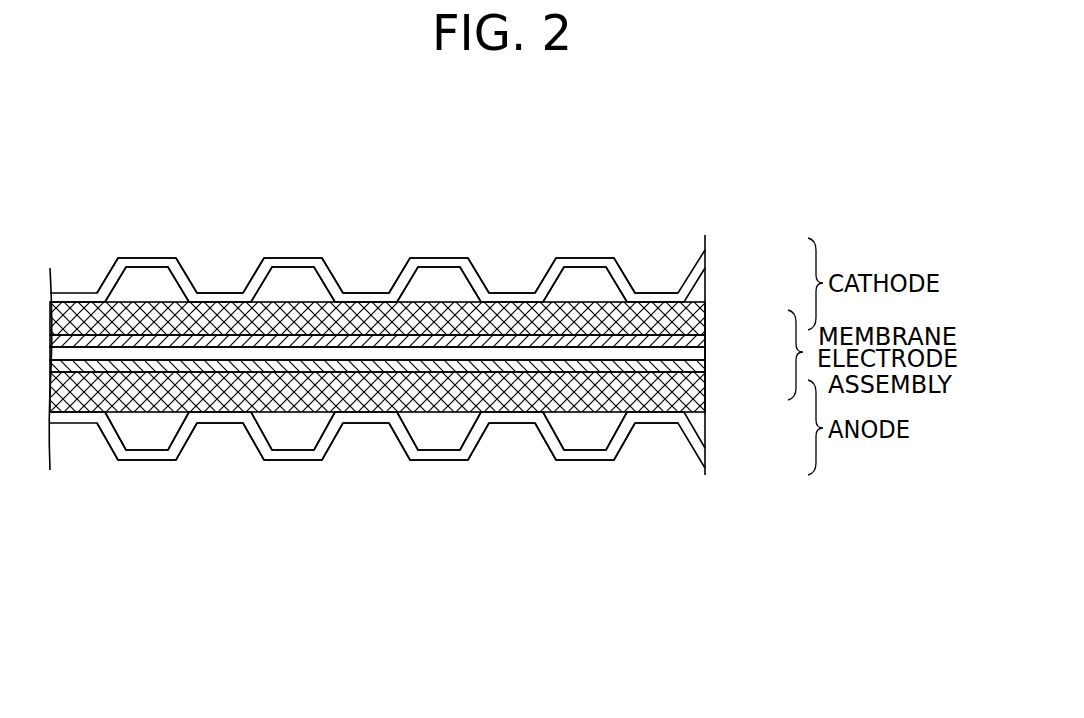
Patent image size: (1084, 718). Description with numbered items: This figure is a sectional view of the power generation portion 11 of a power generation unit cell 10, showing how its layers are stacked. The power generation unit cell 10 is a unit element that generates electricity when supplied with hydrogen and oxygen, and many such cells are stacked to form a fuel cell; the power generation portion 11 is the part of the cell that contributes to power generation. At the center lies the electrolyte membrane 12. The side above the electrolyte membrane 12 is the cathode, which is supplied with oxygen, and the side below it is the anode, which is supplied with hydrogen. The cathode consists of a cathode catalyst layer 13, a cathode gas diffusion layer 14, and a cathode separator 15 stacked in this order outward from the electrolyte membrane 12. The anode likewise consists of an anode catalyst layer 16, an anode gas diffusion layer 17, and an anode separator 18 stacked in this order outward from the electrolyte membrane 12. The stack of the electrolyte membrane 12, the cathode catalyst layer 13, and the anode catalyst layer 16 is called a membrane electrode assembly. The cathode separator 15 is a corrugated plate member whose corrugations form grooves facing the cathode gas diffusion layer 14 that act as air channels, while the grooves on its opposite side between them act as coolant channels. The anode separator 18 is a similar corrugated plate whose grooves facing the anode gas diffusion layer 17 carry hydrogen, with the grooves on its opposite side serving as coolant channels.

The power generation unit cell 10 is at (109, 158).
The power generation portion 11 is at (199, 226).
The electrolyte membrane 12 is at (705, 354).
The cathode catalyst layer 13 is at (707, 345).
The cathode gas diffusion layer 14 is at (707, 322).
The cathode separator 15 is at (703, 277).
The anode catalyst layer 16 is at (707, 366).
The anode gas diffusion layer 17 is at (705, 390).
The anode separator 18 is at (705, 443).